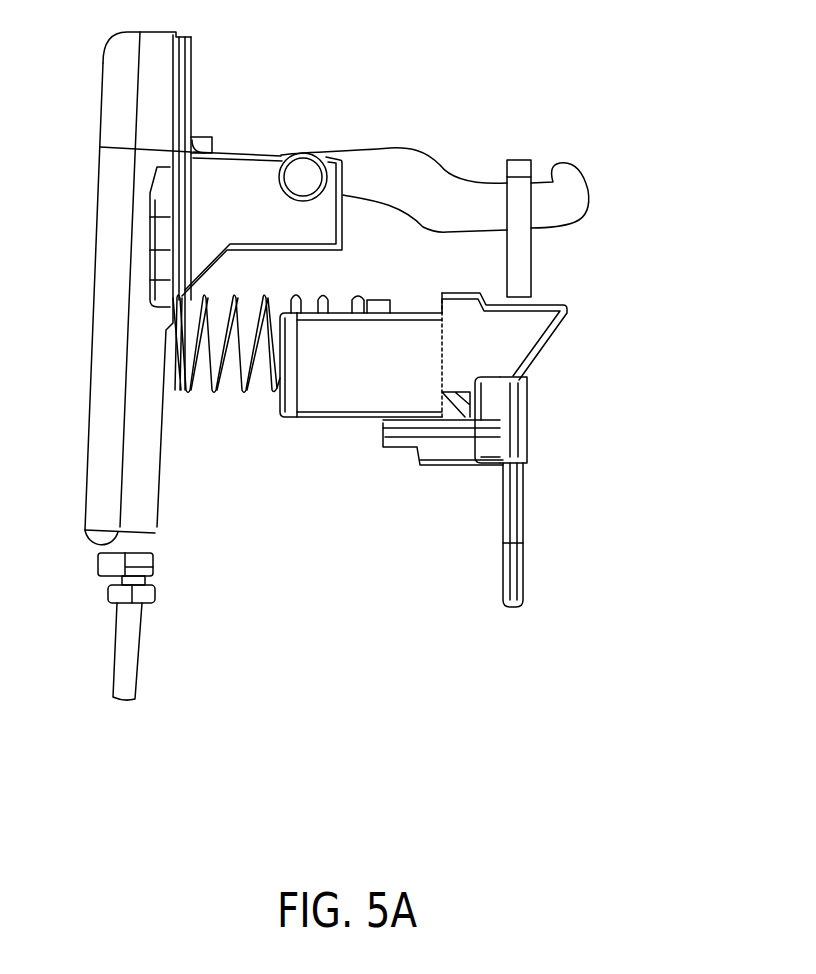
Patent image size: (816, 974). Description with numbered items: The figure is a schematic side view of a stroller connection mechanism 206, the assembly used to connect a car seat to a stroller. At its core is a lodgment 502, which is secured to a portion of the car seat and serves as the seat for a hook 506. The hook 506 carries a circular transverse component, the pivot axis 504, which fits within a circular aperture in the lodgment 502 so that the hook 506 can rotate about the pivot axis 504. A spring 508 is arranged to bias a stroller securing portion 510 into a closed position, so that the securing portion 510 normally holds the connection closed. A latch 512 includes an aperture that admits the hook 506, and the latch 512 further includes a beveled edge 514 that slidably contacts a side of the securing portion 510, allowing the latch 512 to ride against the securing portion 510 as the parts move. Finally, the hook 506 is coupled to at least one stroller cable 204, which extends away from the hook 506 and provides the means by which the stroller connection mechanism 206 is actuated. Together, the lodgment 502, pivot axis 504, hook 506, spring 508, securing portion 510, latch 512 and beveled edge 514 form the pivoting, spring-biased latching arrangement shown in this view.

The stroller cable 204 is at (200, 133).
The stroller connection mechanism 206 is at (713, 373).
The lodgment 502 is at (230, 212).
The pivot axis 504 is at (307, 170).
The hook 506 is at (387, 170).
The spring 508 is at (215, 393).
The stroller securing portion 510 is at (315, 420).
The latch 512 is at (523, 253).
The beveled edge 514 is at (385, 448).